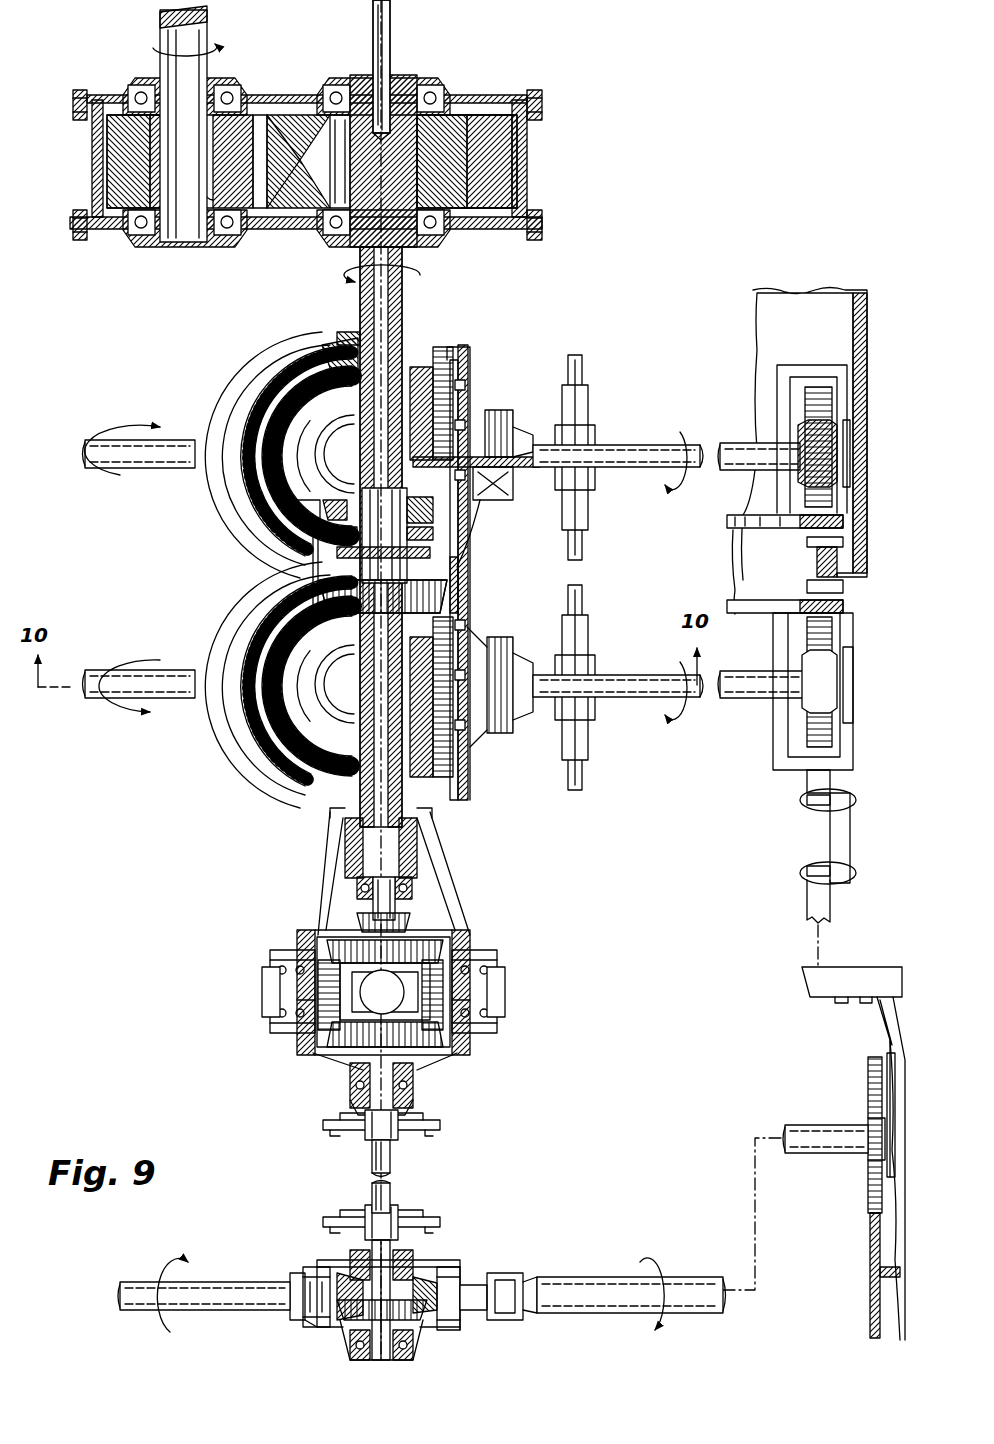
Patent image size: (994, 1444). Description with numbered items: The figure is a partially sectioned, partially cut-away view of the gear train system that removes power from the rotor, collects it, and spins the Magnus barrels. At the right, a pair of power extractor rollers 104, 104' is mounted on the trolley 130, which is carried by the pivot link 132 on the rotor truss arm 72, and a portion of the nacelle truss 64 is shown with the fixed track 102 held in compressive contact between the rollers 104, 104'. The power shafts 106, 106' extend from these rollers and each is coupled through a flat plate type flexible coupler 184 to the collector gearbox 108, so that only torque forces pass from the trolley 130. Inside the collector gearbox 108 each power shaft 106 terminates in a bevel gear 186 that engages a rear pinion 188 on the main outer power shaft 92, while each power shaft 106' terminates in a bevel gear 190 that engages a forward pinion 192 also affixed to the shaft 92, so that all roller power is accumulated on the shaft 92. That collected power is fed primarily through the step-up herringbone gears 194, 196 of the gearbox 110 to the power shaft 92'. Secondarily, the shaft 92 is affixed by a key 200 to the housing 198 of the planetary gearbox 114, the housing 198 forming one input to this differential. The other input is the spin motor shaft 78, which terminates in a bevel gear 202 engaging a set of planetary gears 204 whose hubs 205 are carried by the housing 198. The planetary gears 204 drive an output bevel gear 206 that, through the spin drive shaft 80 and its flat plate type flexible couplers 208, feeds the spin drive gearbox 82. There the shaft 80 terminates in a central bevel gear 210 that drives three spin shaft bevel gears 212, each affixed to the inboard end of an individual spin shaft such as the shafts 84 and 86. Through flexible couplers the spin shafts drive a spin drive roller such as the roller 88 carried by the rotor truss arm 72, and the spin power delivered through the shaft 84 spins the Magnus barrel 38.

The gearbox 110 is at (168, 257).
The power shaft 92' is at (156, 124).
The spin motor shaft 78 is at (373, 36).
The nacelle truss 64 is at (470, 95).
The step-up herringbone gear 196 is at (262, 228).
The step-up herringbone gear 194 is at (500, 228).
The main outer power shaft 92 is at (361, 680).
The bevel gear 190 is at (310, 350).
The power shaft 106' is at (424, 471).
The power shaft 106 is at (443, 721).
The flat plate type flexible coupler 184 is at (205, 503).
The forward pinion 192 is at (320, 530).
The rear pinion 188 is at (300, 572).
The collector gearbox 108 is at (130, 592).
The bevel gear 186 is at (290, 770).
The power extractor roller 104' is at (767, 439).
The fixed track 102 is at (735, 542).
The trolley 130 is at (790, 648).
The power extractor roller 104 is at (790, 686).
The pivot link 132 is at (830, 834).
The rotor truss arm 72 is at (805, 900).
The spin drive roller 88 is at (868, 1075).
The Magnus barrel 38 is at (872, 1232).
The key 200 is at (355, 845).
The planetary housing 198 is at (325, 890).
The bevel gear 202 is at (435, 935).
The planetary gearbox 114 is at (240, 980).
The output bevel gear 206 is at (340, 1055).
The planetary gears 204 is at (385, 991).
The hubs 205 is at (268, 998).
The flat plate type flexible coupler 208 is at (322, 1126).
The spin drive shaft 80 is at (372, 1155).
The spin drive gearbox 82 is at (458, 1338).
The spin shaft bevel gear 212 is at (335, 1270).
The central bevel gear 210 is at (315, 1320).
The spin shaft 86 is at (205, 1310).
The spin shaft 84 is at (572, 1312).